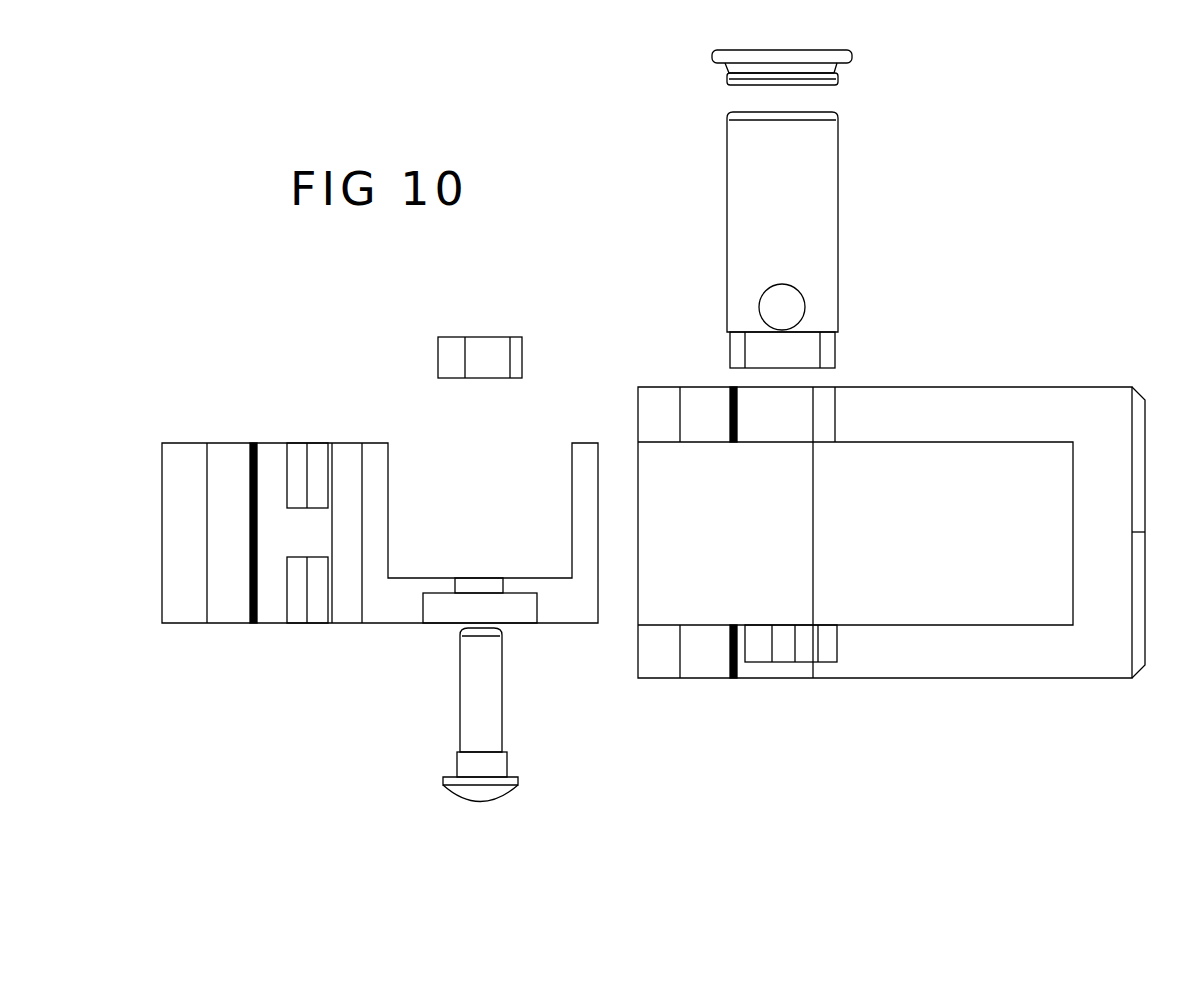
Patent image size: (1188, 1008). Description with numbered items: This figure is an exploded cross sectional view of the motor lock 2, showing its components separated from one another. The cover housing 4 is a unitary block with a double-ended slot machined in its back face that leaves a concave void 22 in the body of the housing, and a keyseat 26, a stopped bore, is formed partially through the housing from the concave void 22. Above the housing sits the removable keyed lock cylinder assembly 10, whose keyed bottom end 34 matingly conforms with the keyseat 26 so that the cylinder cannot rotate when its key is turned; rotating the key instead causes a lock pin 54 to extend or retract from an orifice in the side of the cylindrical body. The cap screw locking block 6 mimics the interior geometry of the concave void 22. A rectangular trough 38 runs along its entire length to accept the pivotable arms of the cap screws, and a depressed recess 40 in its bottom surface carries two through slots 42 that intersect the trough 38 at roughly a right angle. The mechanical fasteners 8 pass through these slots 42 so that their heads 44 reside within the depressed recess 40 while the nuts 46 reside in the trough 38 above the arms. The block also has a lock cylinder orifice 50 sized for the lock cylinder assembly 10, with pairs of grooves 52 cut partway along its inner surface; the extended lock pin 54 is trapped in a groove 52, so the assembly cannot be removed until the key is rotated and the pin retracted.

The motor lock 2 is at (1052, 288).
The cover housing 4 is at (1097, 393).
The cap screw locking block 6 is at (240, 452).
The mechanical fasteners 8 is at (491, 718).
The keyed lock cylinder assembly 10 is at (825, 207).
The concave void 22 is at (992, 583).
The keyseat 26 is at (800, 648).
The bottom end 34 is at (827, 353).
The rectangular trough 38 is at (445, 478).
The depressed recess 40 is at (437, 610).
The through slots 42 is at (475, 583).
The heads 44 is at (500, 797).
The nuts 46 is at (490, 340).
The lock cylinder orifice 50 is at (268, 610).
The grooves 52 is at (296, 453).
The lock pin 54 is at (772, 297).